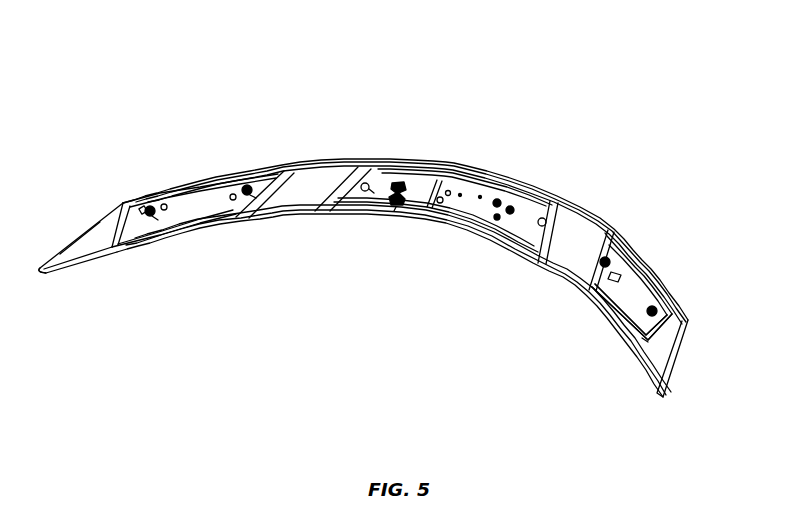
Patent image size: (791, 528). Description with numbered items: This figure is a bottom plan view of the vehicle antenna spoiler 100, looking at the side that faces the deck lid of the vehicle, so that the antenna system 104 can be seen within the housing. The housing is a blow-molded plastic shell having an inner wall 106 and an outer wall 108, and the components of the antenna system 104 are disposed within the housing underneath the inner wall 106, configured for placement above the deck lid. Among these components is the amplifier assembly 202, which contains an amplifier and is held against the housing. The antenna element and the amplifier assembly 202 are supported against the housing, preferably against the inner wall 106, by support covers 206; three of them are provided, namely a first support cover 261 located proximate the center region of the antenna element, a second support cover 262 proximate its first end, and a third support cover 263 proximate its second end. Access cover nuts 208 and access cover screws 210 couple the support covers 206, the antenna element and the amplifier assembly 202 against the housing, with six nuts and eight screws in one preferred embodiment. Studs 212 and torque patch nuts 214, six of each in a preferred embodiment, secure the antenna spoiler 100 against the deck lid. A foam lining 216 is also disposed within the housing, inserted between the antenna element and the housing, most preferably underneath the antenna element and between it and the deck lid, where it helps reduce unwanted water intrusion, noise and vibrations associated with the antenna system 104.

The vehicle antenna spoiler 100 is at (97, 51).
The antenna system 104 is at (191, 243).
The inner wall 106 is at (71, 278).
The outer wall 108 is at (76, 241).
The amplifier assembly 202 is at (672, 352).
The support covers 206 is at (447, 225).
The first support cover 261 is at (553, 167).
The second support cover 262 is at (255, 167).
The third support cover 263 is at (668, 315).
The access cover nuts 208 is at (417, 213).
The access cover screws 210 is at (245, 187).
The studs 212 is at (391, 309).
The torque patch nuts 214 is at (247, 218).
The foam lining 216 is at (262, 190).